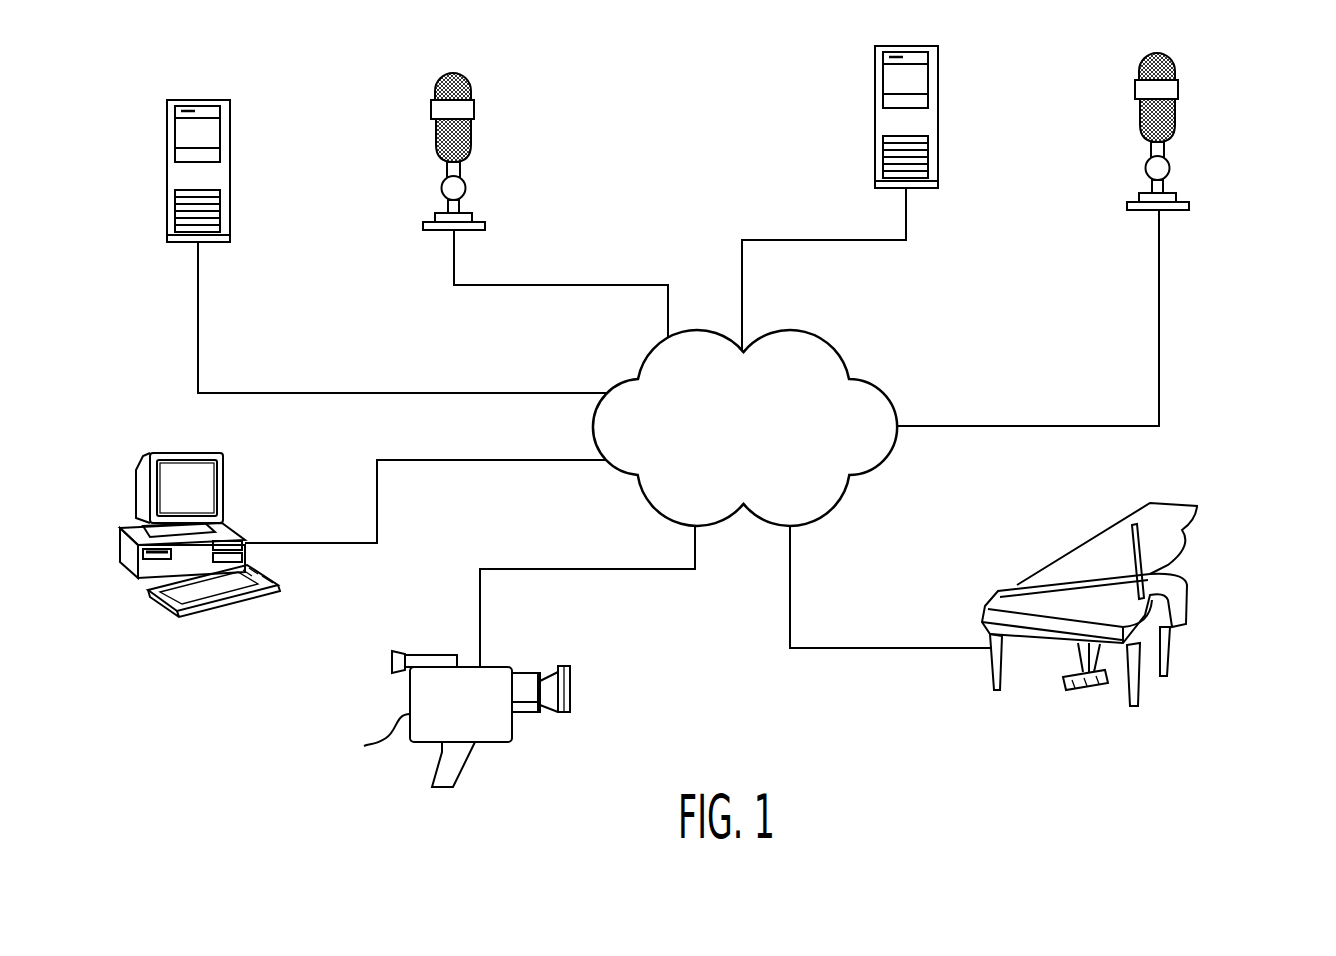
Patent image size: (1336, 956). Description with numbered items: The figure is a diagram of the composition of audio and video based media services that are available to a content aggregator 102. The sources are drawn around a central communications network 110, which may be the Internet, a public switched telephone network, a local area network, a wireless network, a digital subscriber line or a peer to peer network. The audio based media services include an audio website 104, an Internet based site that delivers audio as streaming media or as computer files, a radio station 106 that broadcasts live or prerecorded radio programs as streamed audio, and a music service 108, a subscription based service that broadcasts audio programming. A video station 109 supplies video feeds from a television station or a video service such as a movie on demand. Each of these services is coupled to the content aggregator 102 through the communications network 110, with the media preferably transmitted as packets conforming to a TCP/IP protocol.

The content aggregator 102 is at (224, 480).
The audio website 104 is at (232, 147).
The radio station 106 is at (476, 110).
The music service 108 is at (1190, 594).
The video station 109 is at (572, 692).
The communications network 110 is at (833, 341).